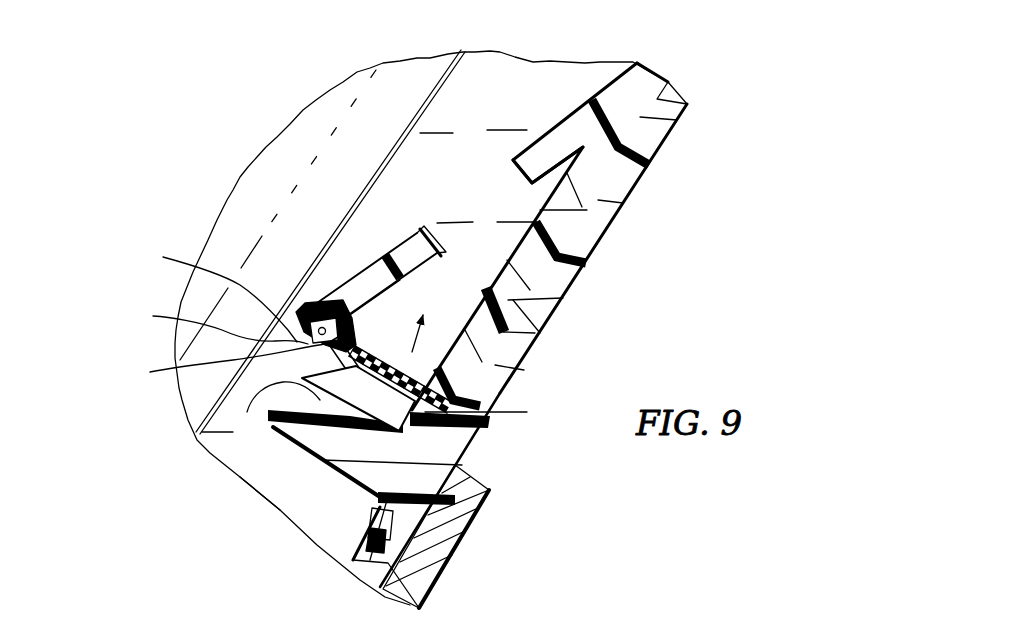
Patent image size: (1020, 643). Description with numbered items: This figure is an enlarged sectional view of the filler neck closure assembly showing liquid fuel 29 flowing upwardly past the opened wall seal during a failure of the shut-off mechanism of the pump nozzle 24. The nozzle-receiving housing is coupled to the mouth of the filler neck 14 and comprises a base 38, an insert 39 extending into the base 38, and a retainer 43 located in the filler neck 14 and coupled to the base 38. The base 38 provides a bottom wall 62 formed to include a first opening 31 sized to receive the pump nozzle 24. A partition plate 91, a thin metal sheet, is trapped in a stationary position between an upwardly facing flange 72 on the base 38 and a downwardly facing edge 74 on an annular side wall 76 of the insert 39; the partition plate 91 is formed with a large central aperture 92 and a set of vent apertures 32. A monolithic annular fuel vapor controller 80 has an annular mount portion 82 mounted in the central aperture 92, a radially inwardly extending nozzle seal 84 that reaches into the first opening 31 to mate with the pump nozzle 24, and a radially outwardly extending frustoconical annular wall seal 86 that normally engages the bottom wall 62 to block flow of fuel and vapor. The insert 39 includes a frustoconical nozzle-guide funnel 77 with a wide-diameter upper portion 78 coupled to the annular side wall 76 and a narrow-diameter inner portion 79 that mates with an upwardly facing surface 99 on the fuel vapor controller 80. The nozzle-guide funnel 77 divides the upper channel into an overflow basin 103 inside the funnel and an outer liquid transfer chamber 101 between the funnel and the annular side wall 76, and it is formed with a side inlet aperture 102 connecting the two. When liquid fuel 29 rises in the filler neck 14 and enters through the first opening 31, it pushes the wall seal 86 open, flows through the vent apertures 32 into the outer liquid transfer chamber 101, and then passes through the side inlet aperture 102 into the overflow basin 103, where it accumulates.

The filler neck 14 is at (485, 520).
The pump nozzle 24 is at (320, 133).
The liquid fuel 29 is at (513, 97).
The first opening 31 is at (240, 477).
The vent apertures 32 is at (398, 368).
The base 38 is at (594, 270).
The insert 39 is at (600, 90).
The retainer 43 is at (357, 550).
The bottom wall 62 is at (343, 442).
The upwardly facing flange 72 is at (423, 430).
The downwardly facing edge 74 is at (430, 376).
The annular side wall 76 is at (563, 298).
The nozzle-guide funnel 77 is at (377, 253).
The wide-diameter upper portion 78 is at (568, 128).
The narrow-diameter inner portion 79 is at (350, 303).
The annular fuel vapor controller 80 is at (313, 297).
The annular mount portion 82 is at (236, 341).
The nozzle seal 84 is at (215, 291).
The frustoconical annular wall seal 86 is at (322, 447).
The partition plate 91 is at (491, 412).
The central aperture 92 is at (215, 322).
The upwardly facing surface 99 is at (497, 335).
The outer liquid transfer chamber 101 is at (495, 336).
The side inlet aperture 102 is at (450, 200).
The overflow basin 103 is at (467, 90).